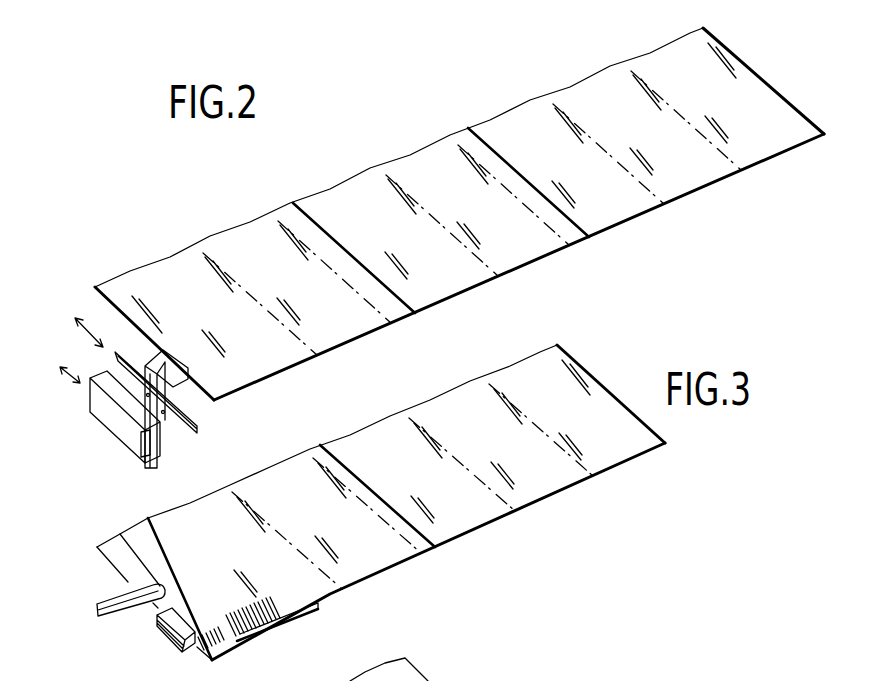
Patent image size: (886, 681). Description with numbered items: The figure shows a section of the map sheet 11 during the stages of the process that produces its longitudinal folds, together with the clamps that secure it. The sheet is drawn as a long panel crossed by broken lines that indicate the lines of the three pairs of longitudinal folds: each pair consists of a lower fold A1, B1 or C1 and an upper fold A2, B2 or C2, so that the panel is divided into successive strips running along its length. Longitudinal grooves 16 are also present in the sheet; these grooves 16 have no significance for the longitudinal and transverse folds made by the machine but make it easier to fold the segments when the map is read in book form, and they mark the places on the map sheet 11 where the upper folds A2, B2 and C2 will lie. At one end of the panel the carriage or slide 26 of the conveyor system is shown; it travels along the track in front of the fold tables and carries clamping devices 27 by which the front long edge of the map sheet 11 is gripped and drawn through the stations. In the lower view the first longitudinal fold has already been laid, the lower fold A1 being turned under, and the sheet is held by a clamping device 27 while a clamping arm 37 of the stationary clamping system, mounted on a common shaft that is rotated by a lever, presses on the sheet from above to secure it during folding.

In FIG. 2, the map sheet 11 is at (291, 300).
In FIG. 3, the map sheet 11 is at (381, 513).
In FIG. 2, the longitudinal grooves 16 is at (228, 378).
In FIG. 3, the longitudinal grooves 16 is at (254, 603).
In FIG. 2, the carriage or slide 26 is at (164, 454).
In FIG. 2, the clamping devices 27 is at (201, 393).
In FIG. 3, the clamping devices 27 is at (173, 628).
In FIG. 3, the clamping arms 37 is at (118, 616).
In FIG. 2, the lower fold A1 is at (202, 250).
In FIG. 3, the lower fold A1 is at (300, 612).
In FIG. 2, the upper fold A2 is at (279, 218).
In FIG. 2, the lower fold B1 is at (384, 172).
In FIG. 3, the lower fold B1 is at (240, 496).
In FIG. 2, the upper fold B2 is at (457, 145).
In FIG. 3, the upper fold B2 is at (314, 458).
In FIG. 2, the lower fold C1 is at (551, 102).
In FIG. 3, the lower fold C1 is at (494, 499).
In FIG. 2, the upper fold C2 is at (629, 70).
In FIG. 3, the upper fold C2 is at (576, 464).